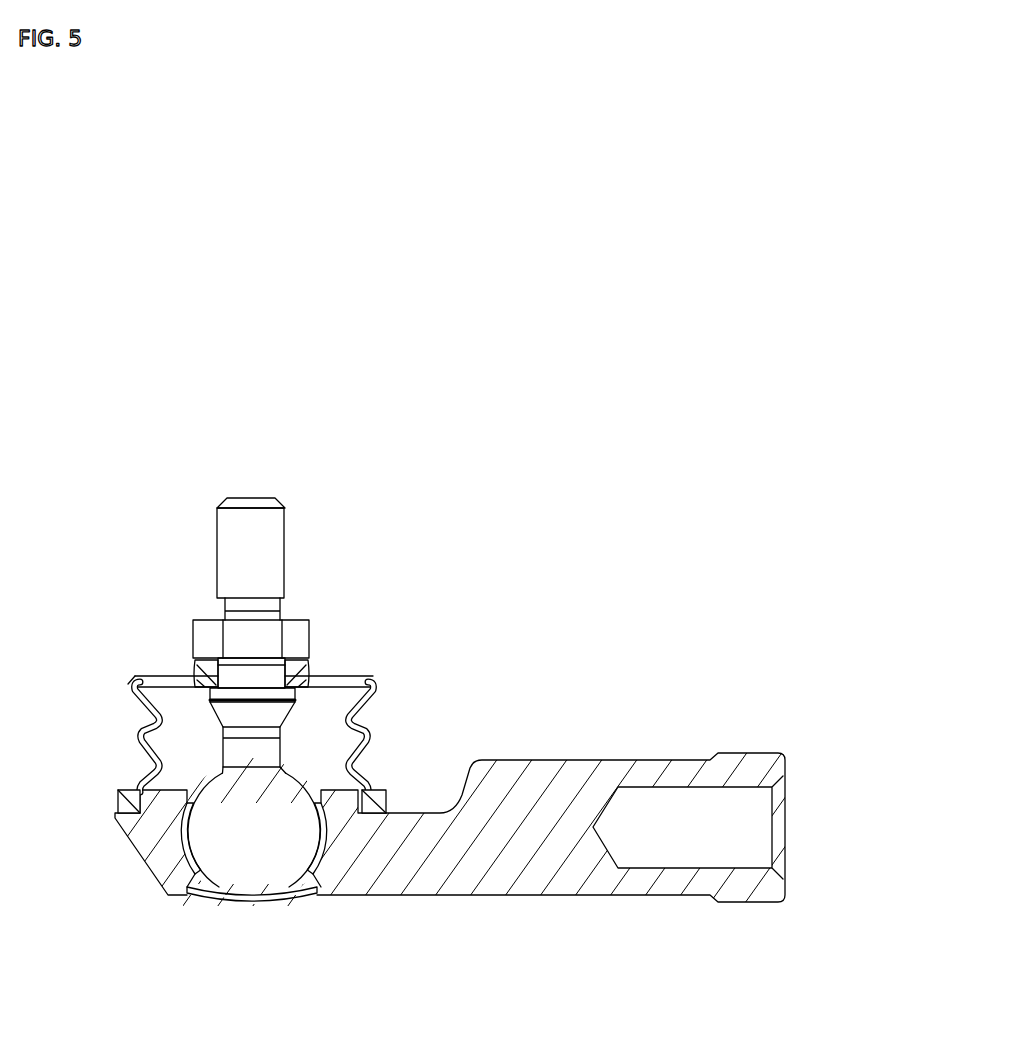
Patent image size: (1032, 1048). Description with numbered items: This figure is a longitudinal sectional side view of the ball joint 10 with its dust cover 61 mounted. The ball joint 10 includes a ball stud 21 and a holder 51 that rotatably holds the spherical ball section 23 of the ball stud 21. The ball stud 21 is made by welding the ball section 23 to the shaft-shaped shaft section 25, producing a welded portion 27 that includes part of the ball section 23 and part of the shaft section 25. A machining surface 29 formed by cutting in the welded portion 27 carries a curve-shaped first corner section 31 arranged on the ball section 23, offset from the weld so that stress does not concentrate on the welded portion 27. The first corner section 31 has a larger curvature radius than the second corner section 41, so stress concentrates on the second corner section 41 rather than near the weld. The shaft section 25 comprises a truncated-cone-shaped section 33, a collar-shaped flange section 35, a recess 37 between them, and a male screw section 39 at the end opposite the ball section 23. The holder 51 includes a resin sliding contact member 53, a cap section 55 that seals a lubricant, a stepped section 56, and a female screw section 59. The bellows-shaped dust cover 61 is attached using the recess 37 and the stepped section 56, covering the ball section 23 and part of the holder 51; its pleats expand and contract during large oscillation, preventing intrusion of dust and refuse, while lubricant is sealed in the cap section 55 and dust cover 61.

The ball joint 10 is at (430, 699).
The ball stud 21 is at (248, 660).
The ball section 23 is at (200, 787).
The shaft section 25 is at (222, 608).
The welded portion 27 is at (248, 727).
The machining surface 29 is at (219, 765).
The first corner section 31 is at (283, 775).
The truncated-cone-shaped section 33 is at (272, 711).
The flange section 35 is at (297, 642).
The recess 37 is at (198, 672).
The male screw section 39 is at (222, 502).
The second corner section 41 is at (335, 675).
The holder 51 is at (430, 788).
The resin sliding contact member 53 is at (187, 892).
The cap section 55 is at (253, 905).
The stepped section 56 is at (148, 800).
The female screw section 59 is at (736, 788).
The dust cover 61 is at (128, 680).